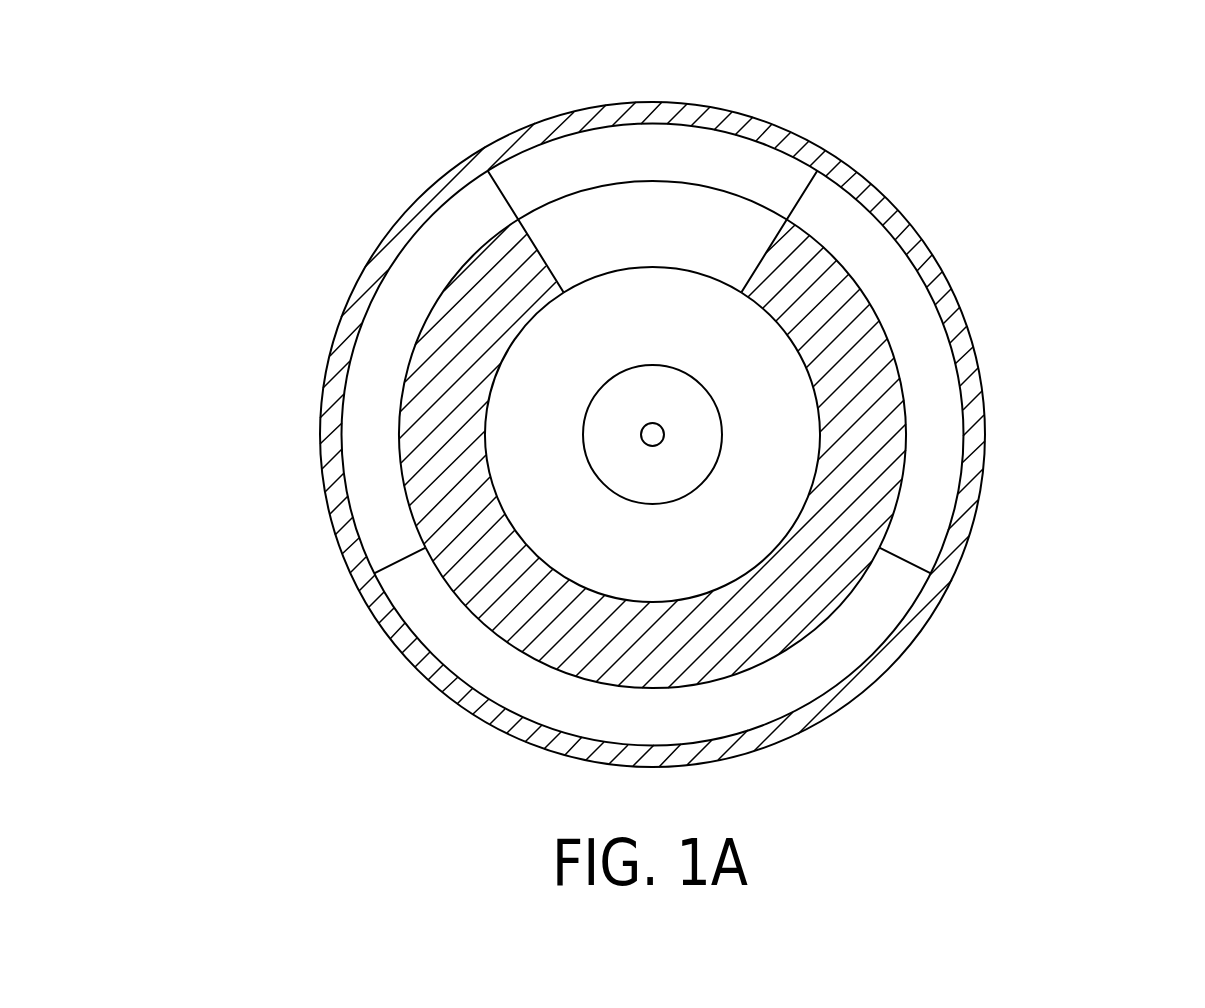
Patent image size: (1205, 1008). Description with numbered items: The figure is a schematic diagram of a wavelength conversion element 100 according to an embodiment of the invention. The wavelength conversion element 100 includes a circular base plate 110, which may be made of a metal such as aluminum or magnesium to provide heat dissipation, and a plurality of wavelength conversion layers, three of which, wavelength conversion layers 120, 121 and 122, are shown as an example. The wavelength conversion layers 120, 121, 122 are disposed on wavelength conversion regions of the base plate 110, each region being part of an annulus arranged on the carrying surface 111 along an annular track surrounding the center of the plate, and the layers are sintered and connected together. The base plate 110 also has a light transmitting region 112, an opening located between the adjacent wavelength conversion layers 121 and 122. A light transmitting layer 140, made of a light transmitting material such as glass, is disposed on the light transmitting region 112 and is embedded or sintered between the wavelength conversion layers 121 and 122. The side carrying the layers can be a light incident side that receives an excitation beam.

The wavelength conversion element 100 is at (208, 102).
The base plate 110 is at (975, 338).
The carrying surface 111 is at (949, 291).
The light transmitting region 112 is at (728, 192).
The wavelength conversion layer 120 is at (853, 642).
The wavelength conversion layer 121 is at (377, 425).
The wavelength conversion layer 122 is at (928, 392).
The light transmitting layer 140 is at (558, 167).